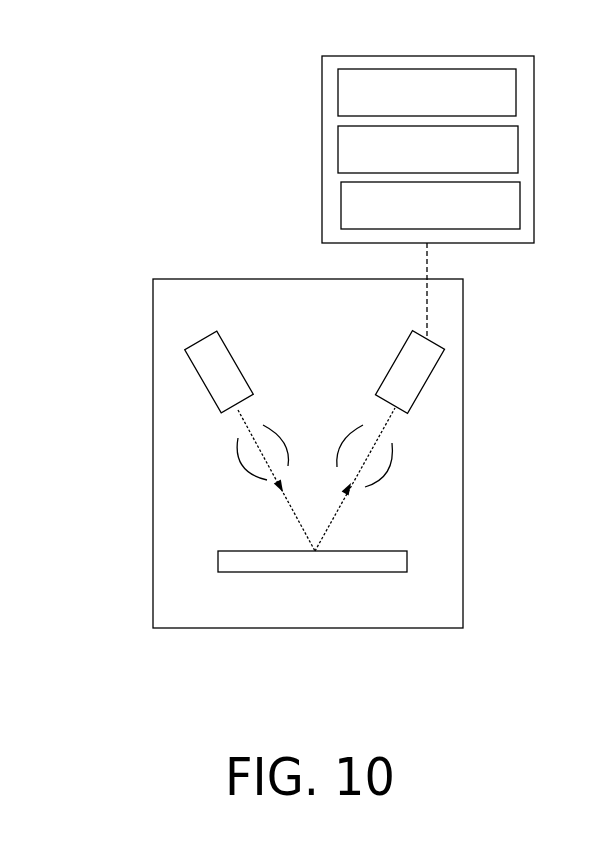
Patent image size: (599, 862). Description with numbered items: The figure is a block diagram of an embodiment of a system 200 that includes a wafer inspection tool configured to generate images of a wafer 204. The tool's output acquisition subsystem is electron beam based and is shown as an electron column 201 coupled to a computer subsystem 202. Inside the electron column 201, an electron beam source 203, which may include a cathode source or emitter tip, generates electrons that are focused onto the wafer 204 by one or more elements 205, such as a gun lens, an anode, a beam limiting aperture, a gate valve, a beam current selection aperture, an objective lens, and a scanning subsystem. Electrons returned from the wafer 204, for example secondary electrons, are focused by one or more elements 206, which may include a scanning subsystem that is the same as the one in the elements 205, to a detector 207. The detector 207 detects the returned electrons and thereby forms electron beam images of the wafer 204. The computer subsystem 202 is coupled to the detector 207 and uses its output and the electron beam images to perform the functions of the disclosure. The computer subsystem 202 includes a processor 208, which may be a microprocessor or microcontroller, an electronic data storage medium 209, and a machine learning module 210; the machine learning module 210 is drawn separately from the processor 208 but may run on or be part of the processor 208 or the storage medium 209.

The system 200 is at (154, 121).
The electron column 201 is at (291, 279).
The computer subsystem 202 is at (428, 56).
The electron beam source 203 is at (225, 343).
The wafer 204 is at (362, 551).
The one or more elements 205 is at (248, 474).
The one or more elements 206 is at (388, 468).
The detector 207 is at (405, 348).
The processor 208 is at (447, 102).
The electronic data storage medium 209 is at (448, 158).
The machine learning module 210 is at (450, 214).